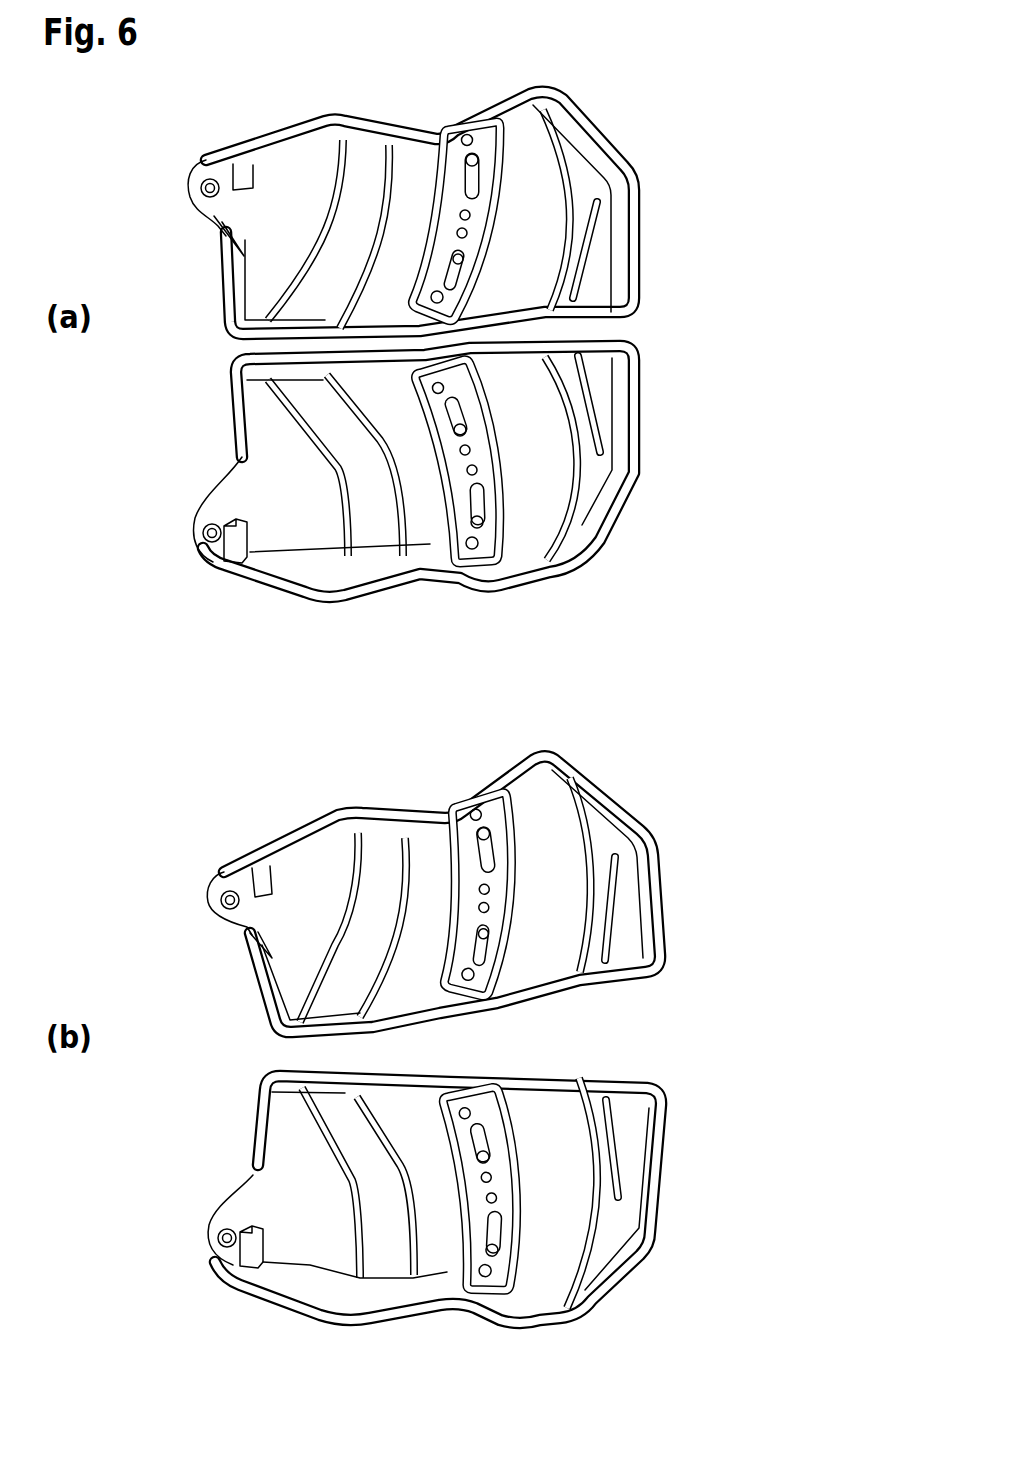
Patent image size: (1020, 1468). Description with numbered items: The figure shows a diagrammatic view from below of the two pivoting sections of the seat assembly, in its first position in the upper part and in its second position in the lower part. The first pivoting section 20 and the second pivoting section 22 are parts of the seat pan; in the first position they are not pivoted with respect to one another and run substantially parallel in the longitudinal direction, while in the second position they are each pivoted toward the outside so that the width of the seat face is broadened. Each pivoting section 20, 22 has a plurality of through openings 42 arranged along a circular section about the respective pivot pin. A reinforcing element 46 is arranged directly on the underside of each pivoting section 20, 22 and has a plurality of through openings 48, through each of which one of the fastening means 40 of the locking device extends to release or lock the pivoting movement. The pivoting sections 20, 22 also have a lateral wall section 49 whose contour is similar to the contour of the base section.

The first pivoting section 20 is at (303, 160).
The second pivoting section 22 is at (300, 522).
The fastening means 40 is at (480, 162).
The through openings 42 is at (473, 813).
The reinforcing element 46 is at (477, 138).
The through openings 48 is at (487, 213).
The lateral wall section 49 is at (600, 123).